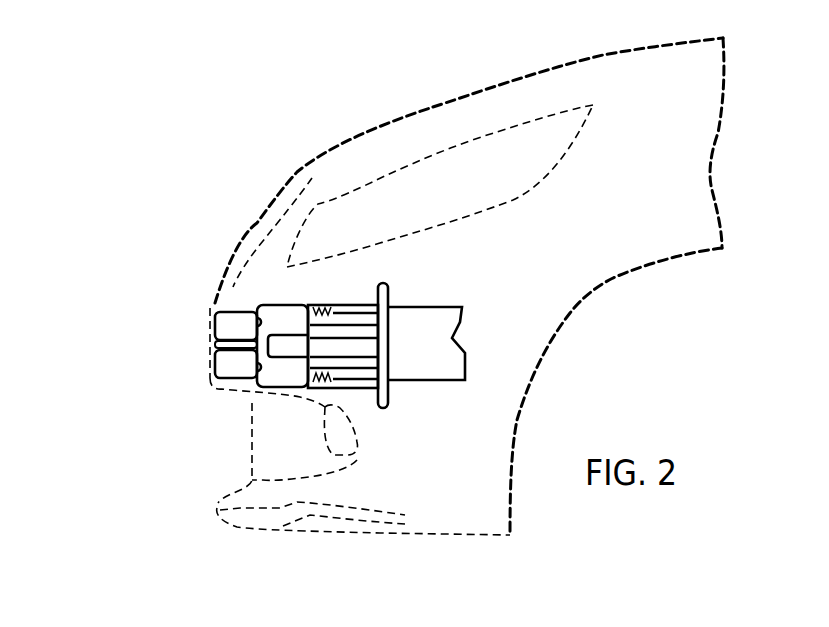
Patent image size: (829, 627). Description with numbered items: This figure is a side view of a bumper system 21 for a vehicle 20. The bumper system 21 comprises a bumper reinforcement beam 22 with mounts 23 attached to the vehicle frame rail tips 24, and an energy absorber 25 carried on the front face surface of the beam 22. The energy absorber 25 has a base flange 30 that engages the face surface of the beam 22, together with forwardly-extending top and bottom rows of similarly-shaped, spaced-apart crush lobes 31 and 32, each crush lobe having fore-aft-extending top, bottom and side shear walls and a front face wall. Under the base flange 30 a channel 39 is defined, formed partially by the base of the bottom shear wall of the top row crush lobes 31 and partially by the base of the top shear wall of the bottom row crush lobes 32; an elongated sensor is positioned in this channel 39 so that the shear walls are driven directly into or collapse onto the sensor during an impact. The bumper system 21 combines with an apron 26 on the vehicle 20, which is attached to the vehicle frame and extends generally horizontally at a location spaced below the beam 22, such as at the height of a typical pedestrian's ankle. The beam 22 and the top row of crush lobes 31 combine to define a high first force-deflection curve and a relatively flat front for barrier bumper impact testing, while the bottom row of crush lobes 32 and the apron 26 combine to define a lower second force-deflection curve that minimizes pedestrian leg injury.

The vehicle 20 is at (297, 153).
The bumper system 21 is at (192, 308).
The bumper reinforcement beam 22 is at (272, 382).
The mounts 23 is at (350, 368).
The vehicle frame rail tips 24 is at (407, 353).
The energy absorber 25 is at (211, 369).
The apron 26 is at (270, 517).
The base flange 30 is at (257, 306).
The top row crush lobes 31 is at (219, 329).
The bottom row crush lobes 32 is at (218, 358).
The channel 39 is at (215, 345).